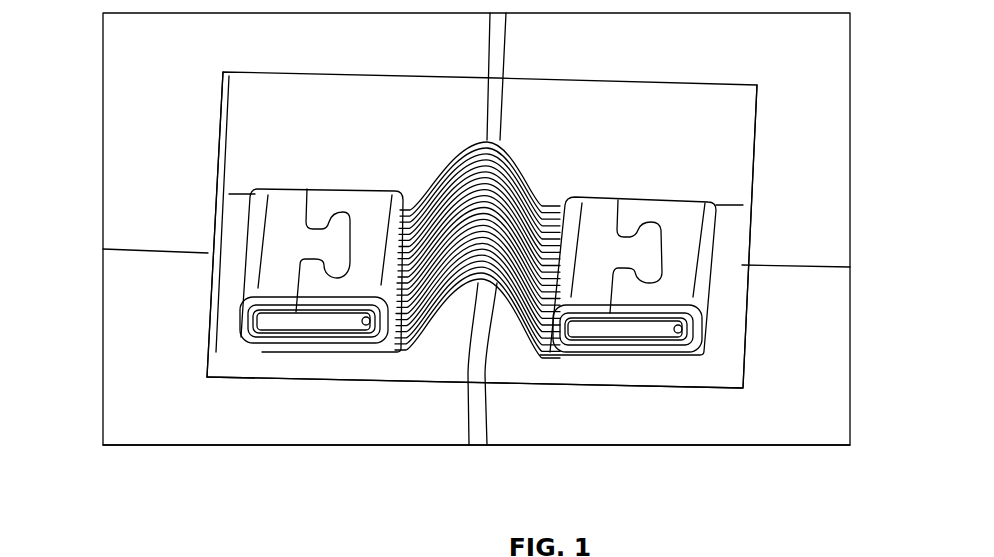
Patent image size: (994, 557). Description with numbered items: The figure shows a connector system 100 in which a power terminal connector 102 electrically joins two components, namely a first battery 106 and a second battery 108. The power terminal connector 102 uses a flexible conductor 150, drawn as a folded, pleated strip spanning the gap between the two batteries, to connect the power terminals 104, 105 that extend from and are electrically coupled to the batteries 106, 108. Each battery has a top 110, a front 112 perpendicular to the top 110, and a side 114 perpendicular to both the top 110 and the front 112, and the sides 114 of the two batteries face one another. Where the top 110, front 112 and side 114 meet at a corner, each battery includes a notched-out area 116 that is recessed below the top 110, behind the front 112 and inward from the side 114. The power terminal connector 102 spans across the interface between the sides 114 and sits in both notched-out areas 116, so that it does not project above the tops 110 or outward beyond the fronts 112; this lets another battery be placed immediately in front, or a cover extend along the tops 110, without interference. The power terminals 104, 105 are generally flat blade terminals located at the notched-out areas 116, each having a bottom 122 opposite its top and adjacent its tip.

The connector system 100 is at (583, 118).
The power terminal connector 102 is at (392, 361).
The power terminal 104 is at (317, 332).
The power terminal 105 is at (637, 333).
The battery 106 is at (457, 56).
The battery 108 is at (587, 56).
The top 110 is at (157, 230).
The front 112 is at (155, 340).
The side 114 is at (482, 404).
The notched-out area 116 is at (448, 362).
The bottom 122 is at (476, 501).
The flexible conductor 150 is at (450, 155).